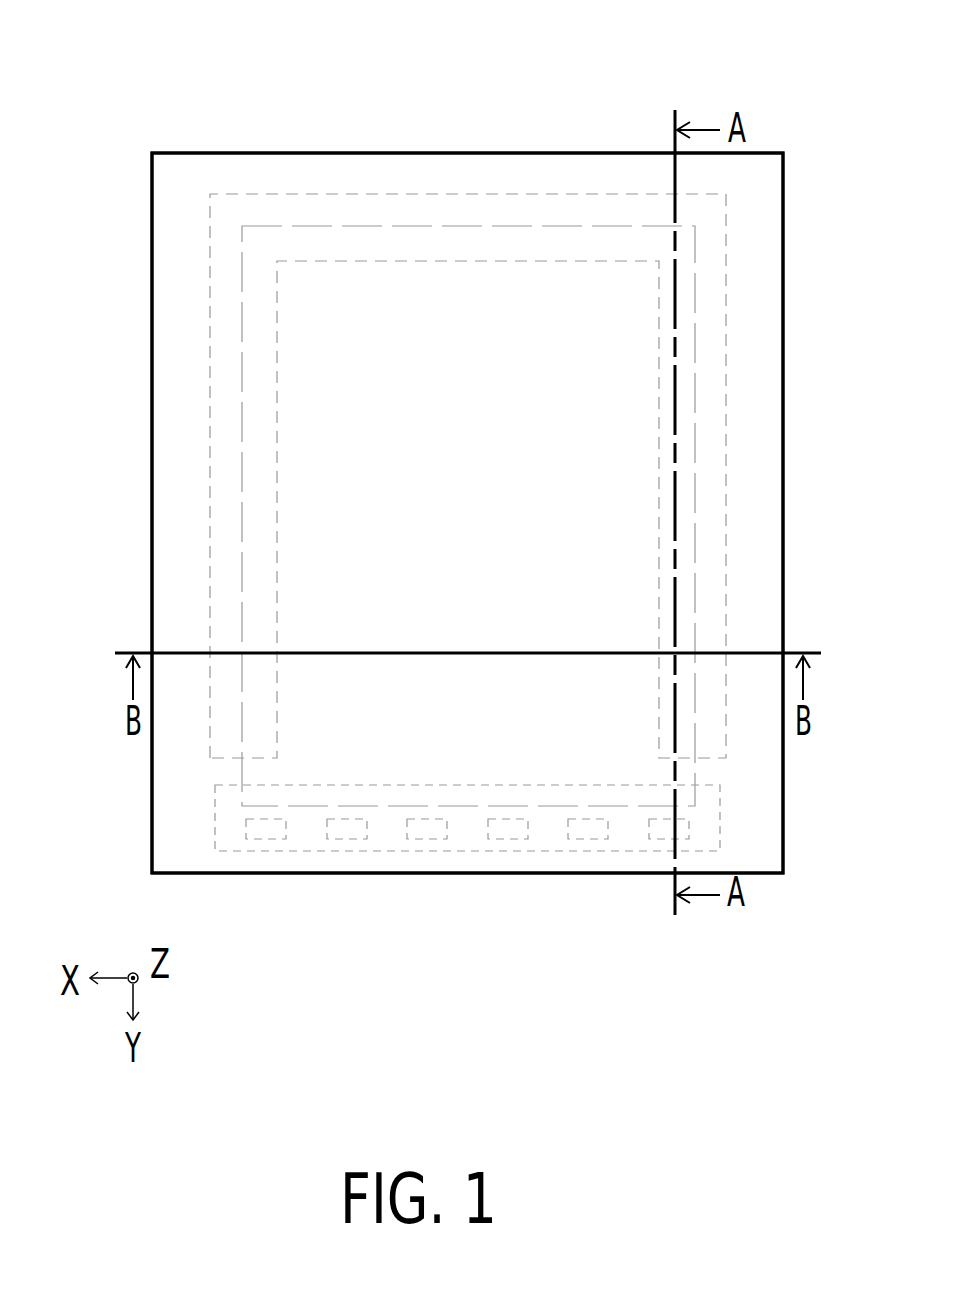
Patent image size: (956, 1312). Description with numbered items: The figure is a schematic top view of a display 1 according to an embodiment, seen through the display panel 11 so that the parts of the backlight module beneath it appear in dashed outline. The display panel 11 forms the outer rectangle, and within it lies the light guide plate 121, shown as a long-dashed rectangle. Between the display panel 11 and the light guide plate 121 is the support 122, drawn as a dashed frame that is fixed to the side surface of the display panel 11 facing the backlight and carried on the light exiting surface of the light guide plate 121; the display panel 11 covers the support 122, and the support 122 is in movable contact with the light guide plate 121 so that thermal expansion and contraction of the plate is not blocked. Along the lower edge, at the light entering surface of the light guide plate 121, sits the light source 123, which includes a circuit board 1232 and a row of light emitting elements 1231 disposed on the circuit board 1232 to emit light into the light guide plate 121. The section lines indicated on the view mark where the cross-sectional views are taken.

The display 1 is at (143, 35).
The display panel 11 is at (260, 873).
The light guide plate 121 is at (470, 226).
The support 122 is at (210, 276).
The light source 123 is at (467, 908).
The light emitting element 1231 is at (503, 839).
The circuit board 1232 is at (398, 851).